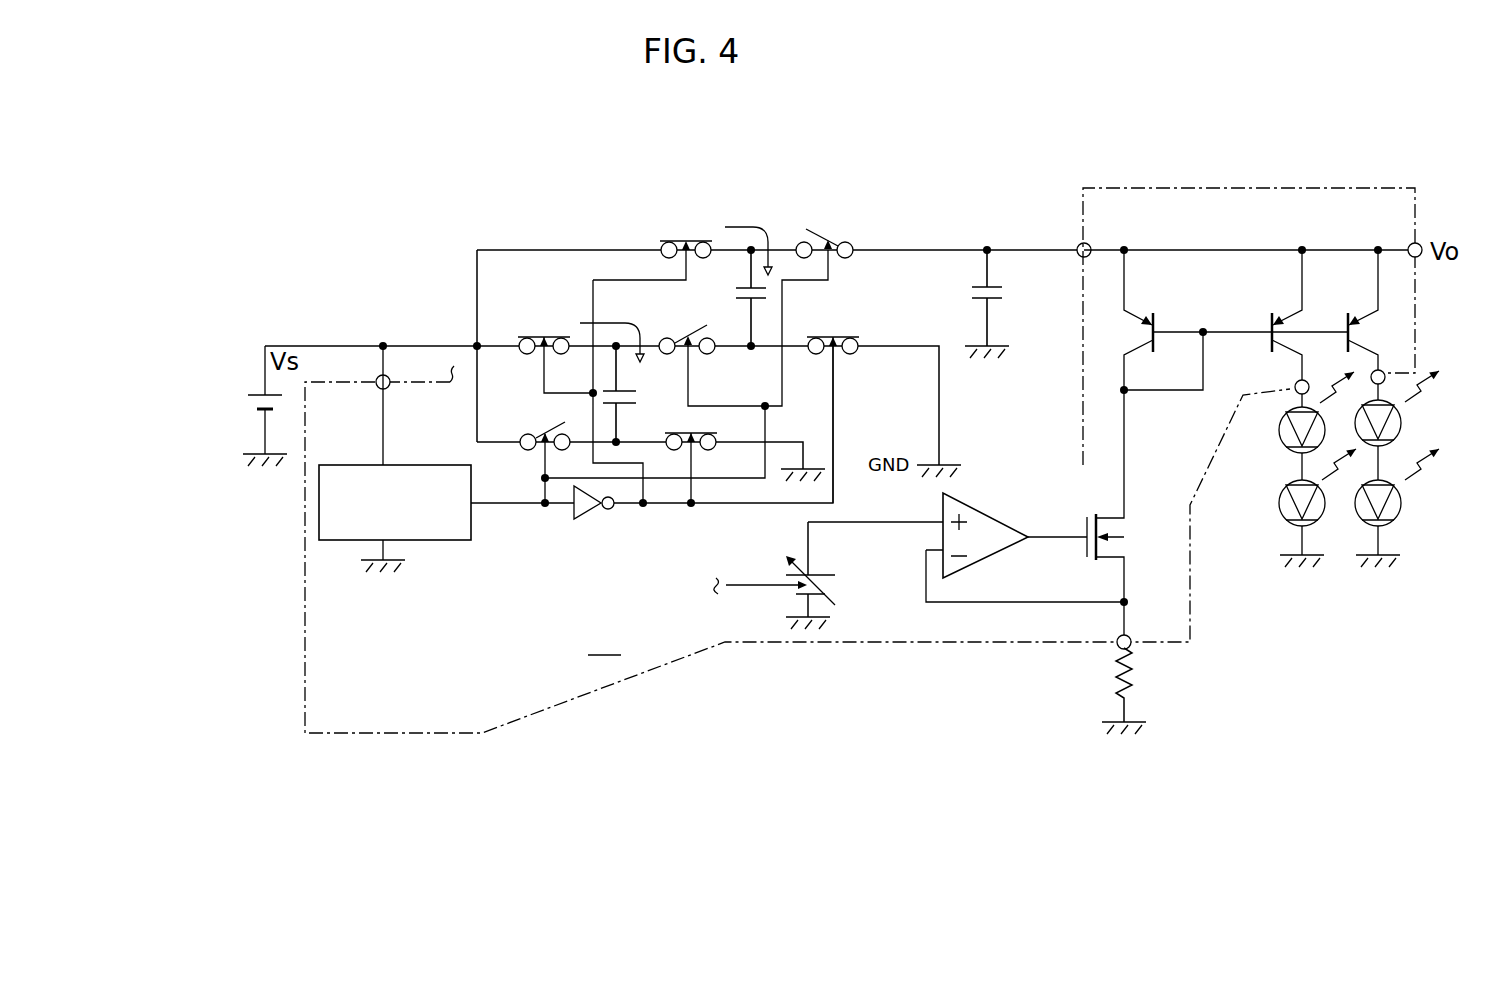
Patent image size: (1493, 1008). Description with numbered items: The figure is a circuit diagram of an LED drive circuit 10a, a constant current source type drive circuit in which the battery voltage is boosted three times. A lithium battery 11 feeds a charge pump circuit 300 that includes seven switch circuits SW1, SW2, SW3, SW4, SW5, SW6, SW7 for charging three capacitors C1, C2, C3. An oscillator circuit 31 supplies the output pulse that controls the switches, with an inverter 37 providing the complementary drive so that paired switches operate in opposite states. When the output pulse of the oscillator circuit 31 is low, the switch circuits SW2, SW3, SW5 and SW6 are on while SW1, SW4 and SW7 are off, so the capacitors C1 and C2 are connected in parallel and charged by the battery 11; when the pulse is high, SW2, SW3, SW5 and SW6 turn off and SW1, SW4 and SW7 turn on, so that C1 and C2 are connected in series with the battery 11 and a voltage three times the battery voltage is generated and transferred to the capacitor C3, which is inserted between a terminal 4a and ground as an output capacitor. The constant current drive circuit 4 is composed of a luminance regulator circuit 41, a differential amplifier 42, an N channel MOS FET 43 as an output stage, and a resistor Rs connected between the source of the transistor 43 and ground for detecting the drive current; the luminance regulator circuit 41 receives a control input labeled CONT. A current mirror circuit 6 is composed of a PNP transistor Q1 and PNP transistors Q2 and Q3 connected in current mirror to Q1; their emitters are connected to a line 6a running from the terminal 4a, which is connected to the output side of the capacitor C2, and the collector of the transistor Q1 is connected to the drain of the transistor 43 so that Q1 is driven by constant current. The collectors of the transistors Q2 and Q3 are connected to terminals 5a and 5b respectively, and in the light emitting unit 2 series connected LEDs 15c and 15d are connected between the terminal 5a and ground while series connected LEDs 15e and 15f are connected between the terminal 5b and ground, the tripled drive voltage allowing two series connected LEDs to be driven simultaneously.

The LED drive circuit 10a is at (968, 97).
The constant current drive circuit 4 is at (946, 627).
The terminal 4a is at (1077, 245).
The current mirror circuit 6 is at (1262, 216).
The line 6a is at (1185, 250).
The lithium battery 11 is at (245, 402).
The oscillator circuit 31 is at (420, 463).
The charge pump circuit 300 is at (617, 578).
The inverter 37 is at (577, 520).
The luminance regulator circuit 41 is at (823, 575).
The differential amplifier 42 is at (982, 512).
The N channel MOS FET 43 is at (1110, 522).
The light emitting unit 2 is at (1195, 518).
The terminal 5a is at (1296, 383).
The terminal 5b is at (1388, 373).
The LED 15c is at (1285, 440).
The LED 15d is at (1280, 512).
The LED 15e is at (1403, 428).
The LED 15f is at (1405, 510).
The switch circuit SW1 is at (531, 450).
The switch circuit SW2 is at (704, 456).
The switch circuit SW3 is at (544, 331).
The switch circuit SW4 is at (647, 340).
The switch circuit SW5 is at (833, 330).
The switch circuit SW6 is at (722, 235).
The switch circuit SW7 is at (824, 231).
The capacitor C1 is at (625, 394).
The capacitor C2 is at (734, 298).
The capacitor C3 is at (1008, 303).
The PNP transistor Q1 is at (1225, 322).
The PNP transistor Q2 is at (1303, 315).
The PNP transistor Q3 is at (1372, 310).
The resistor Rs is at (1147, 684).
The control signal input CONT is at (730, 587).